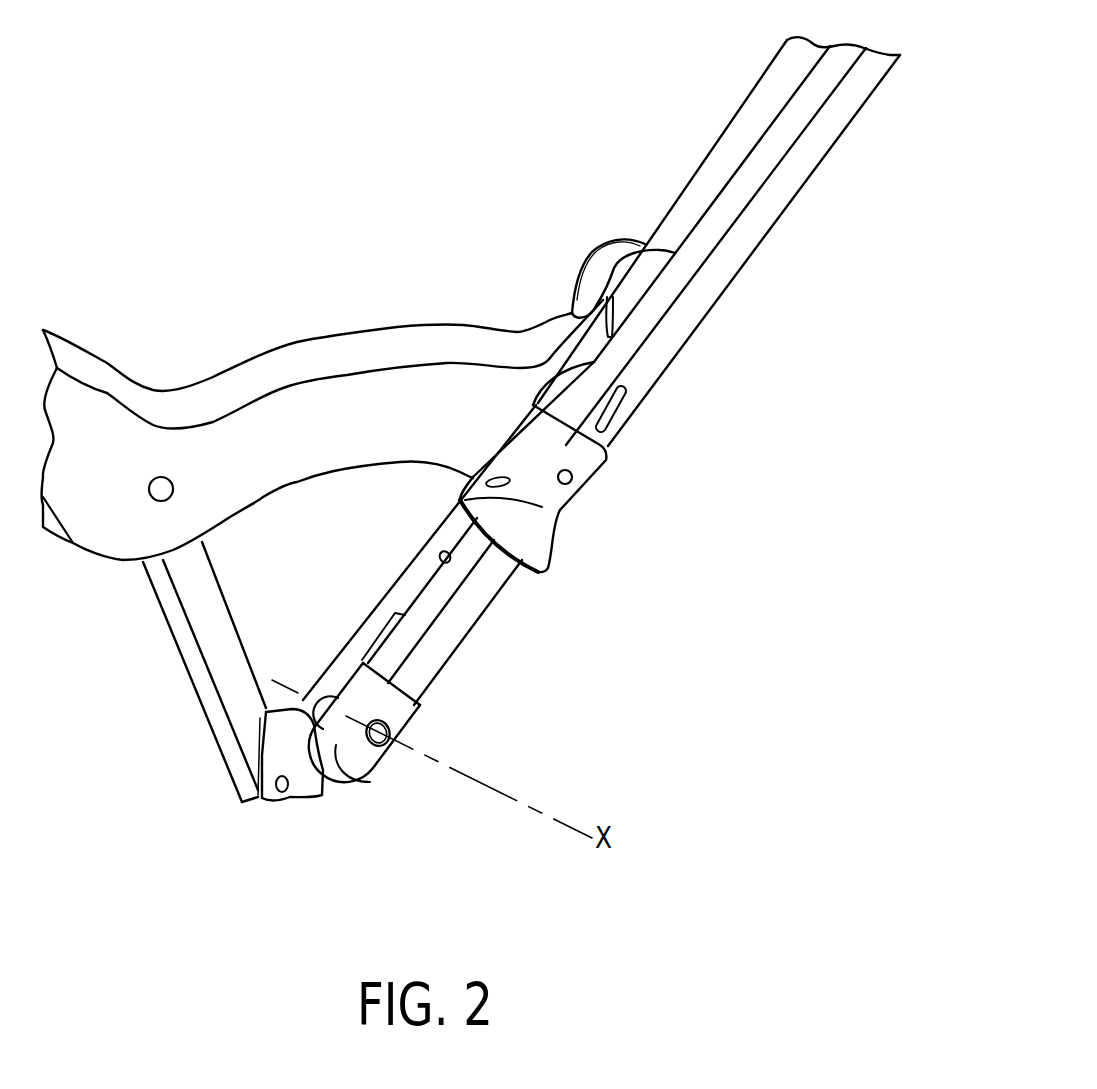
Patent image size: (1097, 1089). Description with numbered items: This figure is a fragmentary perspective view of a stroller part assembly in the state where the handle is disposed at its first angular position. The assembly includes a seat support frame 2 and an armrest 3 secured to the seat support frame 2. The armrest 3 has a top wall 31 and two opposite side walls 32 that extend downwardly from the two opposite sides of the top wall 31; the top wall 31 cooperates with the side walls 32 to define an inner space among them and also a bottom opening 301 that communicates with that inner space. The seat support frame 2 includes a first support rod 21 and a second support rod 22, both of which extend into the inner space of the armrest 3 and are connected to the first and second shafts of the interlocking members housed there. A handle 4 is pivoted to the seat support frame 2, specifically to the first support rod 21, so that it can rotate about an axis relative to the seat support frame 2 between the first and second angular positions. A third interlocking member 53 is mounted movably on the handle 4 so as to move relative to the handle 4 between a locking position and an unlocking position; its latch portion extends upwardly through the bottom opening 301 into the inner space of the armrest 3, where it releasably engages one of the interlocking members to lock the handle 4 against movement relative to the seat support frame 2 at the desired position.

The seat support frame 2 is at (193, 672).
The first support rod 21 is at (752, 118).
The second support rod 22 is at (240, 690).
The armrest 3 is at (358, 392).
The top wall 31 is at (423, 345).
The side walls 32 is at (242, 438).
The bottom opening 301 is at (347, 482).
The handle 4 is at (728, 255).
The third interlocking member 53 is at (577, 507).